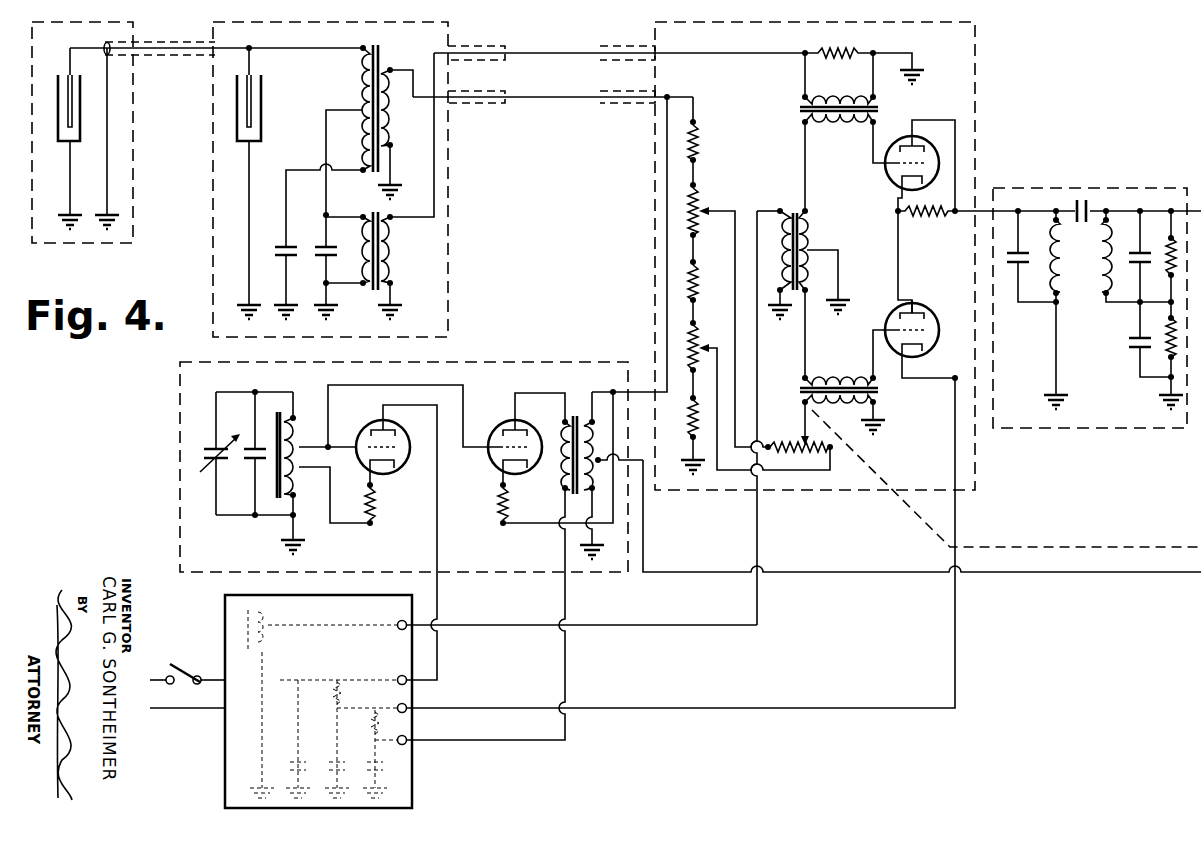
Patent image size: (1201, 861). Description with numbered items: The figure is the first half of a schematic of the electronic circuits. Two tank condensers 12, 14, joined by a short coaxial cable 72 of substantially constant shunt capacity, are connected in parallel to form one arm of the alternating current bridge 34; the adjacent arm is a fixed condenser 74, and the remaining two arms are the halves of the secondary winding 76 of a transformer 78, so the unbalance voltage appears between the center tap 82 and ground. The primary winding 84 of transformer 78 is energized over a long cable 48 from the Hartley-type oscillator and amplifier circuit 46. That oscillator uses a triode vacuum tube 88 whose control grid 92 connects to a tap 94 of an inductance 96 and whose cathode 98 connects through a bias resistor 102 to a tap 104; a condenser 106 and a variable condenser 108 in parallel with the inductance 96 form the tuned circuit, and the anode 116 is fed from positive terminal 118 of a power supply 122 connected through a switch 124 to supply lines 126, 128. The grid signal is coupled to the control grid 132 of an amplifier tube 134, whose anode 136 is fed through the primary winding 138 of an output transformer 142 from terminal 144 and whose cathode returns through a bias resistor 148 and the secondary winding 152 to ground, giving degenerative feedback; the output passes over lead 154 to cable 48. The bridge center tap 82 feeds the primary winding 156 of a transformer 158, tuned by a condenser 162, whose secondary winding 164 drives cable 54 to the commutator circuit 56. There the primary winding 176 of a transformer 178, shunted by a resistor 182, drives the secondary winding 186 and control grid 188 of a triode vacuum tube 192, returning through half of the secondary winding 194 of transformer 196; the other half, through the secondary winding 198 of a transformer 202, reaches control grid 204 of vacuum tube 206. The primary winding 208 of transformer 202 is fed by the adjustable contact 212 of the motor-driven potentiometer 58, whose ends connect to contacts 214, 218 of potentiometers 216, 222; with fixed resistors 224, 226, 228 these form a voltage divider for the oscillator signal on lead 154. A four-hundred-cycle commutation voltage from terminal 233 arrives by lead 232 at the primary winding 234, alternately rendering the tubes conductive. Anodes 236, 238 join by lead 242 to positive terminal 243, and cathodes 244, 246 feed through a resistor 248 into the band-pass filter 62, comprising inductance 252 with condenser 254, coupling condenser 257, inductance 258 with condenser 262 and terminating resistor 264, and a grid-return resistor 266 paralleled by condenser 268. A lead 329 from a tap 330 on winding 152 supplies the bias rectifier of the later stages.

The tank condenser 12 is at (51, 84).
The tank condenser 14 is at (238, 145).
The alternating current bridge 34 is at (448, 212).
The oscillator and amplifier circuit 46 is at (180, 397).
The cable 48 is at (490, 98).
The cable 54 is at (490, 53).
The commutator circuit 56 is at (976, 50).
The motor-driven potentiometer 58 is at (797, 458).
The filter 62 is at (1082, 428).
The coaxial cable 72 is at (168, 55).
The fixed condenser 74 is at (285, 246).
The secondary winding 76 is at (360, 82).
The transformer 78 is at (381, 50).
The center tap 82 is at (360, 110).
The primary winding 84 is at (397, 112).
The triode vacuum tube 88 is at (393, 442).
The control grid 92 is at (360, 450).
The tap 94 is at (298, 445).
The inductance 96 is at (288, 500).
The cathode 98 is at (390, 466).
The bias resistor 102 is at (378, 505).
The tap 104 is at (302, 472).
The condenser 106 is at (252, 462).
The variable condenser 108 is at (200, 448).
The anode 116 is at (376, 428).
The positive voltage terminal 118 is at (401, 676).
The power supply 122 is at (225, 765).
The switch 124 is at (190, 667).
The alternating current supply line 126 is at (150, 680).
The alternating current supply line 128 is at (152, 708).
The control grid 132 is at (490, 468).
The amplifier tube 134 is at (560, 426).
The anode 136 is at (510, 430).
The primary winding 138 is at (560, 484).
The output transformer 142 is at (574, 414).
The positive voltage supply terminal 144 is at (407, 743).
The bias resistor 148 is at (500, 505).
The secondary winding 152 is at (598, 402).
The lead 154 is at (667, 214).
The primary winding 156 is at (370, 282).
The transformer 158 is at (374, 212).
The condenser 162 is at (325, 246).
The secondary winding 164 is at (397, 255).
The primary winding 176 is at (850, 74).
The transformer 178 is at (800, 107).
The resistor 182 is at (820, 50).
The secondary winding 186 is at (848, 128).
The control grid 188 is at (888, 172).
The triode vacuum tube 192 is at (940, 135).
The secondary winding 194 is at (816, 232).
The transformer 196 is at (783, 218).
The secondary winding 198 is at (839, 366).
The transformer 202 is at (806, 388).
The control grid 204 is at (889, 336).
The vacuum tube 206 is at (940, 355).
The primary winding 208 is at (852, 408).
The adjustable contact 212 is at (797, 434).
The adjustable contact 214 is at (710, 215).
The potentiometer 216 is at (699, 200).
The adjustable contact 218 is at (702, 335).
The potentiometer 222 is at (690, 335).
The fixed resistor 224 is at (699, 280).
The fixed resistor 226 is at (700, 142).
The fixed resistor 228 is at (690, 430).
The lead 232 is at (757, 320).
The terminal 233 is at (400, 621).
The primary winding 234 is at (765, 207).
The anode 236 is at (907, 142).
The anode 238 is at (906, 357).
The lead 242 is at (975, 465).
The positive terminal 243 is at (407, 711).
The cathode 244 is at (898, 203).
The cathode 246 is at (916, 312).
The resistor 248 is at (925, 220).
The inductance 252 is at (1047, 226).
The condenser 254 is at (1014, 270).
The condenser 257 is at (1090, 198).
The inductance 258 is at (1098, 278).
The condenser 262 is at (1132, 250).
The terminating resistor 264 is at (1163, 240).
The resistor 266 is at (1168, 340).
The condenser 268 is at (1128, 350).
The lead 329 is at (645, 536).
The tap 330 is at (606, 458).